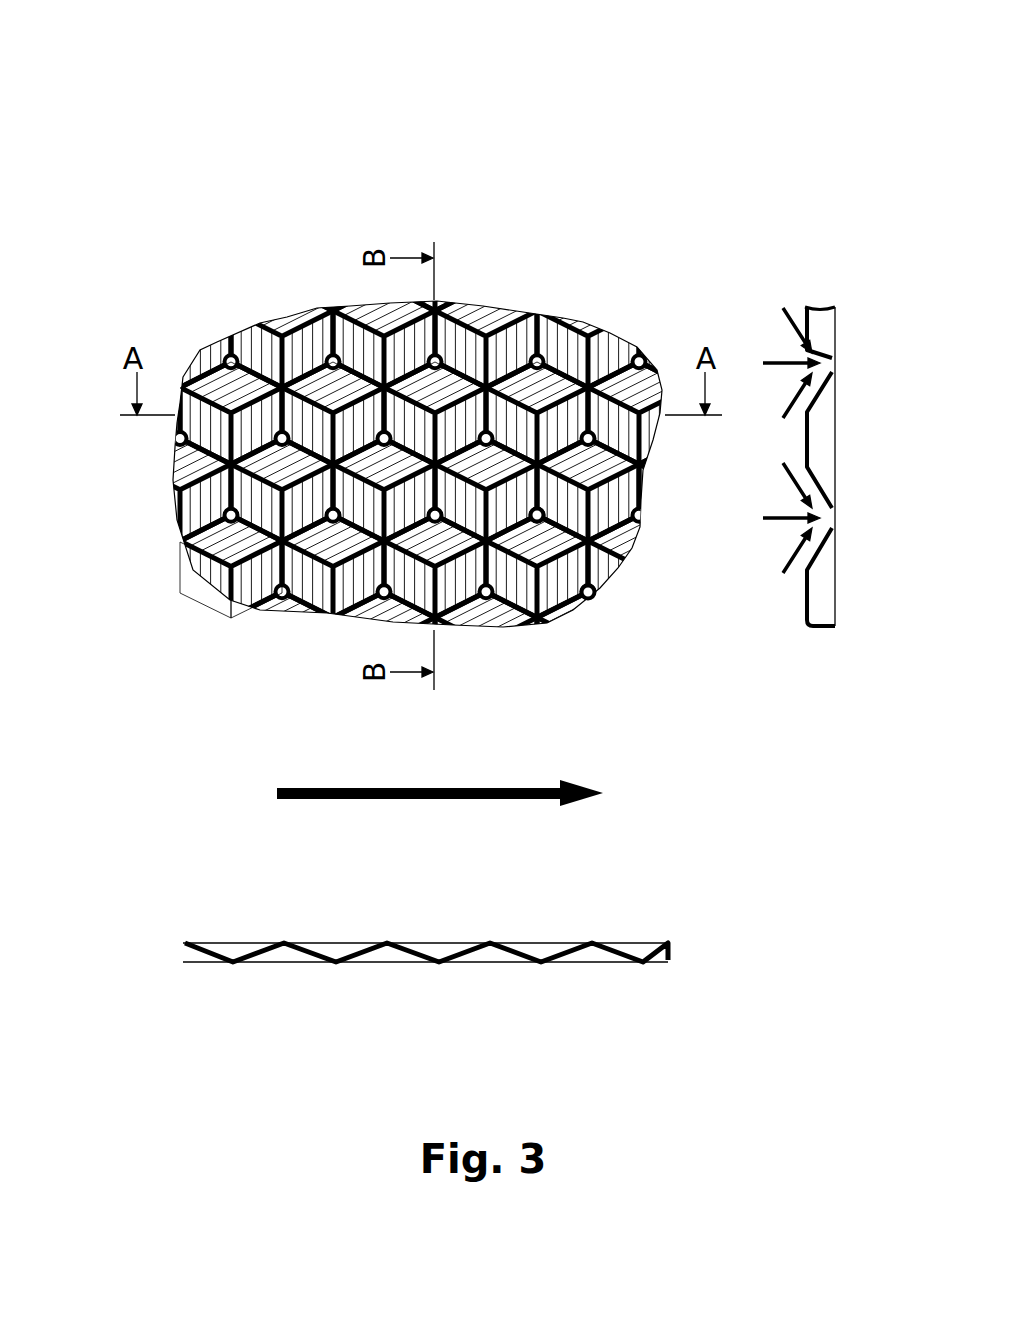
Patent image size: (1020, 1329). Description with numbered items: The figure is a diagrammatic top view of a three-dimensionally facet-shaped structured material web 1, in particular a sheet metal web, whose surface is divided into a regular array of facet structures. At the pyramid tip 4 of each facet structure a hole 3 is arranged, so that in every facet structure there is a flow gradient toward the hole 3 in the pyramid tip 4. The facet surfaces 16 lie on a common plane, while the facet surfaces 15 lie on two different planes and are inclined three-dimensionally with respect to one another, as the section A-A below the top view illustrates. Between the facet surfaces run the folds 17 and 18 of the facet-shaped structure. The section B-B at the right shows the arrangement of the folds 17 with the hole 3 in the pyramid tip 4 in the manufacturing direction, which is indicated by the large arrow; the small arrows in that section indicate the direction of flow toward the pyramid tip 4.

The material web 1 is at (417, 324).
The hole 3 is at (597, 591).
The pyramid tip 4 is at (596, 617).
The facet surface 15 is at (551, 332).
The facet surface 16 is at (319, 381).
The fold 17 is at (264, 583).
The fold 18 is at (197, 565).